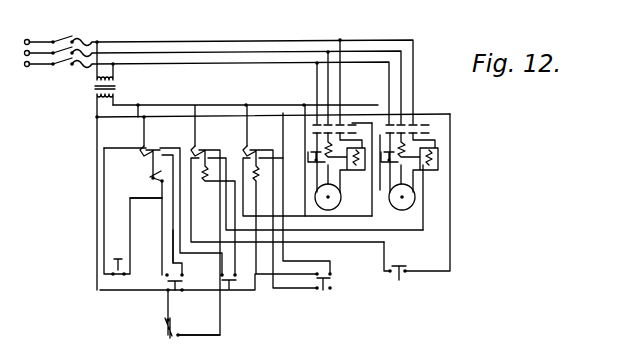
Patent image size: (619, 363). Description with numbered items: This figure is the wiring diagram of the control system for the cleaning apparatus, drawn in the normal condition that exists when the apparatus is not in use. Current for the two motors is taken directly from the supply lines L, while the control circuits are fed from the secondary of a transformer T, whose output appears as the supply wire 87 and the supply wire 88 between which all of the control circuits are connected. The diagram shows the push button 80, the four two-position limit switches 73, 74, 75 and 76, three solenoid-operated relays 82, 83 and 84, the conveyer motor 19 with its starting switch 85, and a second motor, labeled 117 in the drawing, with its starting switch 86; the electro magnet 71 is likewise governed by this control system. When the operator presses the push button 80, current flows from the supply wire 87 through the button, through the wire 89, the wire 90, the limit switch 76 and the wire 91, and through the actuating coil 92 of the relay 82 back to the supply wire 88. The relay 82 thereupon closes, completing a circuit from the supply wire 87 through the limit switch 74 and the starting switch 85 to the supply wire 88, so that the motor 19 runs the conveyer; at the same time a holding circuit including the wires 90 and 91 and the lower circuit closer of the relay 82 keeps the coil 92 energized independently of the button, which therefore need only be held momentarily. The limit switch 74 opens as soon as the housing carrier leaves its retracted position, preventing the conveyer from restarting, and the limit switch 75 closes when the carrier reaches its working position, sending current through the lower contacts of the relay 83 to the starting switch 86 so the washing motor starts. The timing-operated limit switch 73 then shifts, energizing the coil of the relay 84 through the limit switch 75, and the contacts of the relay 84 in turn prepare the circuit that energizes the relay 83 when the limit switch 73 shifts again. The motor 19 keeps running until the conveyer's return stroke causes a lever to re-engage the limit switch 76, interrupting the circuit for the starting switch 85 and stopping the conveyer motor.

The supply lines L is at (173, 65).
The transformer T is at (93, 89).
The supply wire 87 is at (155, 117).
The supply wire 88 is at (193, 117).
The relay 82 is at (181, 200).
The relay 83 is at (300, 230).
The relay 84 is at (236, 208).
The starting switch 85 is at (312, 140).
The starting switch 86 is at (432, 143).
The actuating coil 92 is at (150, 177).
The wire 89 is at (146, 208).
The wire 90 is at (174, 209).
The wire 91 is at (163, 243).
The push button 80 is at (133, 212).
The motor 19 is at (341, 197).
The motor 117 is at (415, 197).
The limit switch 76 is at (168, 282).
The electro magnet 71 is at (175, 328).
The limit switch 74 is at (232, 282).
The limit switch 73 is at (324, 291).
The limit switch 75 is at (417, 209).